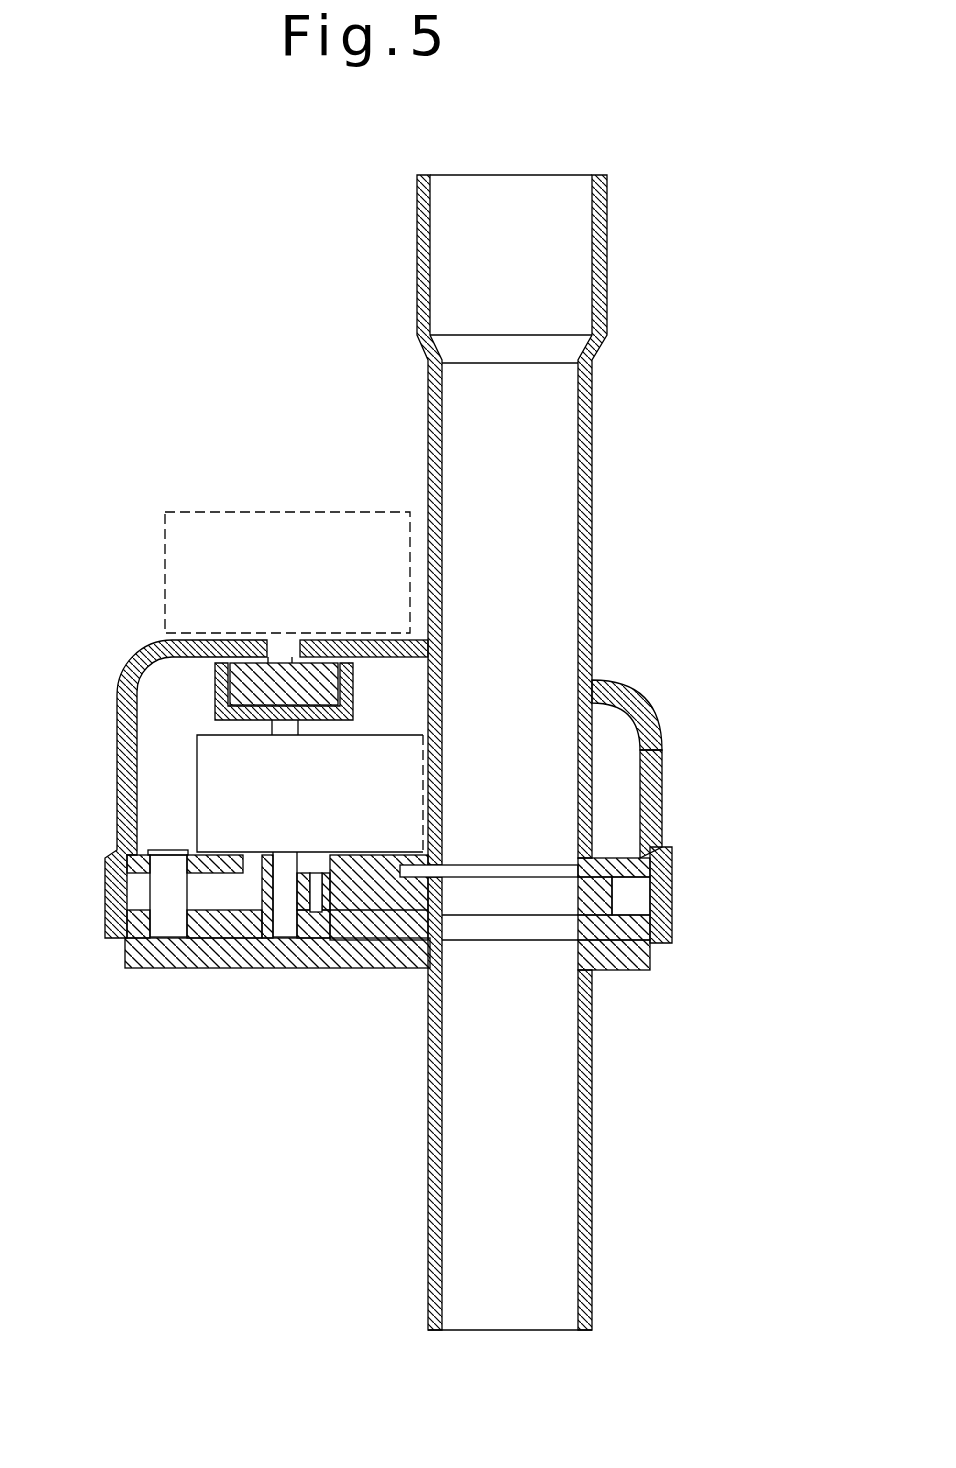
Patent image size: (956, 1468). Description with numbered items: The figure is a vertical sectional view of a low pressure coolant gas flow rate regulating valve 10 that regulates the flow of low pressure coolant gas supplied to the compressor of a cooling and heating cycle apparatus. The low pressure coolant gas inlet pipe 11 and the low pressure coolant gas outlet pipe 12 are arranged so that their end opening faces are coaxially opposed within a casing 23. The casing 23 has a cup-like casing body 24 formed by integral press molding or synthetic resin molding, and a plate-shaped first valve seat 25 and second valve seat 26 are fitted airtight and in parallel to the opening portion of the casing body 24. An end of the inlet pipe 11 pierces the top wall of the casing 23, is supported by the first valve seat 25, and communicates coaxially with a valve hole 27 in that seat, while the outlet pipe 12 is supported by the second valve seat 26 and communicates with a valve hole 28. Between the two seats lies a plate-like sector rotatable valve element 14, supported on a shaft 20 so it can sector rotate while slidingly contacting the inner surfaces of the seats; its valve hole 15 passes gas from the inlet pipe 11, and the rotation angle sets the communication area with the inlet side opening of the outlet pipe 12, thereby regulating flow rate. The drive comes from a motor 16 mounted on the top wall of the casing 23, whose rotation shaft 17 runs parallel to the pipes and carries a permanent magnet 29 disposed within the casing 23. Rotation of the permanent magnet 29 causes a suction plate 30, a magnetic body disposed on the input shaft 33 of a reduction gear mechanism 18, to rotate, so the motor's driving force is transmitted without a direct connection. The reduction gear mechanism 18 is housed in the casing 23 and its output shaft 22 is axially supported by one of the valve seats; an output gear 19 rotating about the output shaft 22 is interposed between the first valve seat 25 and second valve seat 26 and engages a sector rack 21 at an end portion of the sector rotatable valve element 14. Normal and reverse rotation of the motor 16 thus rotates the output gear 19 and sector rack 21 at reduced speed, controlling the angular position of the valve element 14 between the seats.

The low pressure coolant gas flow rate regulating valve 10 is at (172, 479).
The low pressure coolant gas inlet pipe 11 is at (593, 483).
The low pressure coolant gas outlet pipe 12 is at (585, 1143).
The sector rotatable valve element 14 is at (655, 878).
The valve hole 15 is at (650, 930).
The motor 16 is at (165, 573).
The rotation shaft 17 is at (282, 650).
The reduction gear mechanism 18 is at (197, 788).
The output gear 19 is at (310, 905).
The shaft 20 is at (370, 855).
The sector rack 21 is at (330, 905).
The output shaft 22 is at (275, 905).
The casing 23 is at (640, 692).
The casing body 24 is at (662, 745).
The first valve seat 25 is at (625, 857).
The second valve seat 26 is at (632, 968).
The valve hole 27 is at (506, 868).
The valve hole 28 is at (505, 925).
The permanent magnet 29 is at (312, 675).
The suction plate 30 is at (215, 692).
The input shaft 33 is at (217, 727).